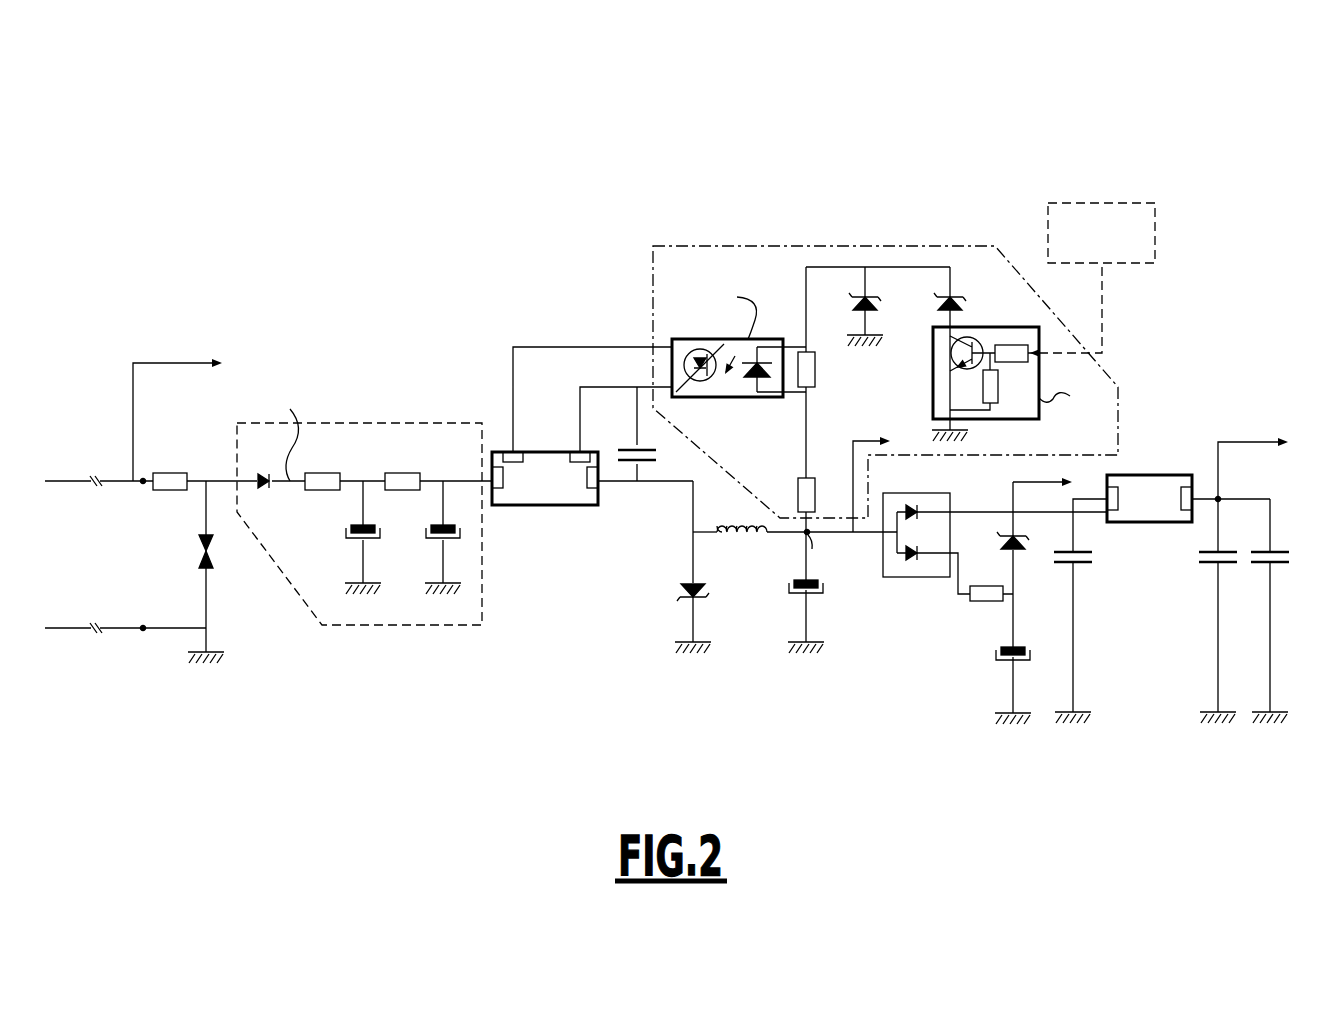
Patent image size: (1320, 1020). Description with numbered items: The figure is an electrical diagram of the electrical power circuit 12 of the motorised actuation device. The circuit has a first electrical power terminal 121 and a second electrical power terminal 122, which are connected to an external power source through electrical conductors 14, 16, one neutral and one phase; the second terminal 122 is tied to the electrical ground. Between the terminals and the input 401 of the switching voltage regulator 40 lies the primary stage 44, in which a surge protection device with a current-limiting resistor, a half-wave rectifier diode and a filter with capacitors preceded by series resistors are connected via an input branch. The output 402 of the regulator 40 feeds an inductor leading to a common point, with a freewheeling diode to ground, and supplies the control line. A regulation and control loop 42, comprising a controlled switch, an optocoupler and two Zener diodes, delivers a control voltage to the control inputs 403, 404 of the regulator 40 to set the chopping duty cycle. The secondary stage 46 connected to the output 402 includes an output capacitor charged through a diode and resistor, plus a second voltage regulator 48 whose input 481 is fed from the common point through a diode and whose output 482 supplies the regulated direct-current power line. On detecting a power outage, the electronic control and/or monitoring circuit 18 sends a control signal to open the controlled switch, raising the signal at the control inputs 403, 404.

The electrical power circuit 12 is at (238, 232).
The electrical conductor 14 is at (68, 630).
The electrical conductor 16 is at (63, 481).
The electronic control and/or monitoring circuit 18 is at (1101, 233).
The voltage regulator 40 is at (553, 483).
The regulation and control loop 42 is at (740, 242).
The primary stage 44 is at (394, 616).
The secondary stage 46 is at (933, 638).
The voltage regulator 48 is at (1149, 496).
The first electrical power terminal 121 is at (143, 484).
The second electrical power terminal 122 is at (143, 626).
The input of the regulator 401 is at (499, 497).
The output of the regulator 402 is at (592, 497).
The control input 403 is at (514, 452).
The control input 404 is at (583, 452).
The input of the voltage regulator 481 is at (1112, 510).
The output of the voltage regulator 482 is at (1182, 487).